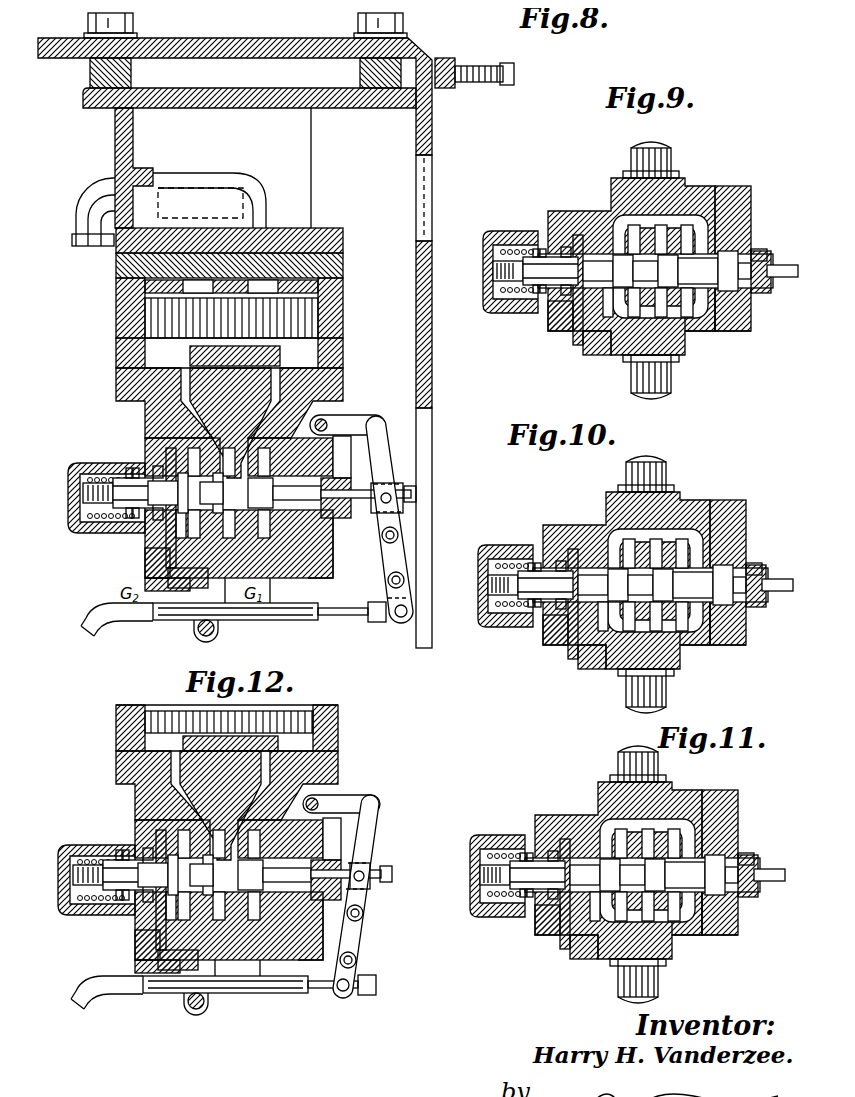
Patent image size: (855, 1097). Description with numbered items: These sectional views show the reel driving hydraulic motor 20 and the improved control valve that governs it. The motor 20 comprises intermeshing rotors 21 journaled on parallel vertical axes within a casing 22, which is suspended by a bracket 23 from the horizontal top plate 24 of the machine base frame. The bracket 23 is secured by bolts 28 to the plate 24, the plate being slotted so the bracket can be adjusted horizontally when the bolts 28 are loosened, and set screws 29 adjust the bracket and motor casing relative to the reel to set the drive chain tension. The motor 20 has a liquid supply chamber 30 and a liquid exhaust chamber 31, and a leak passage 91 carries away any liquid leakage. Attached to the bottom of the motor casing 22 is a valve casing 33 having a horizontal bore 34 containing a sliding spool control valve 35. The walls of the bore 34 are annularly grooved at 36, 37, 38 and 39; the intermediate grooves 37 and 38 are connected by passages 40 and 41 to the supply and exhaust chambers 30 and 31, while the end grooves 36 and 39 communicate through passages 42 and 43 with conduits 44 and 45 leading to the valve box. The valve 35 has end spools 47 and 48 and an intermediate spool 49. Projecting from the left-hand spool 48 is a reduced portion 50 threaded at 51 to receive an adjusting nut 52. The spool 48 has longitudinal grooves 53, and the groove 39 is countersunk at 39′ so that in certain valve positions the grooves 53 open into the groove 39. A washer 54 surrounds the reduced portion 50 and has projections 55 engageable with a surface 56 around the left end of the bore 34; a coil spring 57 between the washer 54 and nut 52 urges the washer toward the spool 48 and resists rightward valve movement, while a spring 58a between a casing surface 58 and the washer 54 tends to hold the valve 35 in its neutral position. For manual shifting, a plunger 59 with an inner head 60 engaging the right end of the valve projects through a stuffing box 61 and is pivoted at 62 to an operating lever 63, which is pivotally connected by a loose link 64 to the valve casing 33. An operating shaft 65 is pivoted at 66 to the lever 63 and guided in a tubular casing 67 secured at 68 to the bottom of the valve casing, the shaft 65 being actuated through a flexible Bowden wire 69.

In FIG. 8, the hydraulic motor 20 is at (335, 260).
In FIG. 12, the hydraulic motor 20 is at (108, 700).
In FIG. 8, the intermeshing rotors 21 is at (290, 312).
In FIG. 12, the intermeshing rotors 21 is at (280, 712).
In FIG. 8, the casing 22 is at (335, 290).
In FIG. 12, the casing 22 is at (320, 712).
In FIG. 8, the bracket 23 is at (107, 128).
In FIG. 8, the top plate 24 is at (260, 30).
In FIG. 8, the bolts 28 is at (126, 12).
In FIG. 8, the set screws 29 is at (458, 62).
In FIG. 8, the liquid supply chamber 30 is at (335, 340).
In FIG. 12, the liquid supply chamber 30 is at (330, 730).
In FIG. 8, the liquid exhaust chamber 31 is at (108, 312).
In FIG. 12, the liquid exhaust chamber 31 is at (108, 718).
In FIG. 8, the valve casing 33 is at (252, 572).
In FIG. 12, the valve casing 33 is at (229, 919).
In FIG. 9, the valve casing 33 is at (631, 254).
In FIG. 10, the valve casing 33 is at (626, 579).
In FIG. 11, the valve casing 33 is at (618, 870).
In FIG. 8, the horizontal bore 34 is at (322, 520).
In FIG. 12, the horizontal bore 34 is at (306, 939).
In FIG. 9, the horizontal bore 34 is at (745, 309).
In FIG. 10, the horizontal bore 34 is at (743, 623).
In FIG. 11, the horizontal bore 34 is at (734, 913).
In FIG. 8, the control valve 35 is at (343, 457).
In FIG. 12, the control valve 35 is at (333, 839).
In FIG. 9, the control valve 35 is at (747, 251).
In FIG. 10, the control valve 35 is at (744, 567).
In FIG. 11, the control valve 35 is at (737, 859).
In FIG. 8, the annular groove 36 is at (300, 562).
In FIG. 12, the annular groove 36 is at (265, 904).
In FIG. 9, the annular groove 36 is at (711, 240).
In FIG. 10, the annular groove 36 is at (708, 551).
In FIG. 11, the annular groove 36 is at (699, 844).
In FIG. 8, the annular groove 37 is at (262, 560).
In FIG. 12, the annular groove 37 is at (237, 970).
In FIG. 9, the annular groove 37 is at (668, 231).
In FIG. 10, the annular groove 37 is at (666, 547).
In FIG. 11, the annular groove 37 is at (658, 838).
In FIG. 8, the annular groove 38 is at (186, 540).
In FIG. 12, the annular groove 38 is at (177, 929).
In FIG. 9, the annular groove 38 is at (617, 305).
In FIG. 10, the annular groove 38 is at (615, 620).
In FIG. 11, the annular groove 38 is at (603, 911).
In FIG. 8, the annular groove 39 is at (220, 520).
In FIG. 12, the annular groove 39 is at (182, 926).
In FIG. 9, the annular groove 39 is at (614, 301).
In FIG. 10, the annular groove 39 is at (613, 620).
In FIG. 11, the annular groove 39 is at (596, 908).
In FIG. 8, the countersink 39′ is at (172, 520).
In FIG. 12, the countersink 39′ is at (140, 955).
In FIG. 9, the countersink 39′ is at (576, 343).
In FIG. 10, the countersink 39′ is at (566, 651).
In FIG. 11, the countersink 39′ is at (549, 947).
In FIG. 8, the passage 40 is at (285, 380).
In FIG. 12, the passage 40 is at (285, 760).
In FIG. 8, the passage 41 is at (160, 372).
In FIG. 12, the passage 41 is at (160, 752).
In FIG. 9, the passage 42 is at (700, 344).
In FIG. 10, the passage 42 is at (698, 653).
In FIG. 11, the passage 42 is at (687, 945).
In FIG. 9, the passage 43 is at (642, 249).
In FIG. 10, the passage 43 is at (645, 554).
In FIG. 11, the passage 43 is at (647, 839).
In FIG. 9, the conduit 44 is at (654, 383).
In FIG. 10, the conduit 44 is at (663, 691).
In FIG. 11, the conduit 44 is at (649, 981).
In FIG. 9, the conduit 45 is at (666, 154).
In FIG. 10, the conduit 45 is at (654, 473).
In FIG. 11, the conduit 45 is at (622, 764).
In FIG. 8, the end spool 47 is at (338, 489).
In FIG. 12, the end spool 47 is at (328, 869).
In FIG. 9, the end spool 47 is at (746, 256).
In FIG. 10, the end spool 47 is at (742, 567).
In FIG. 11, the end spool 47 is at (736, 862).
In FIG. 8, the end spool 48 is at (163, 445).
In FIG. 12, the end spool 48 is at (150, 869).
In FIG. 9, the end spool 48 is at (552, 290).
In FIG. 10, the end spool 48 is at (547, 604).
In FIG. 11, the end spool 48 is at (536, 898).
In FIG. 8, the intermediate spool 49 is at (225, 540).
In FIG. 12, the intermediate spool 49 is at (232, 831).
In FIG. 9, the intermediate spool 49 is at (637, 323).
In FIG. 10, the intermediate spool 49 is at (583, 551).
In FIG. 11, the intermediate spool 49 is at (587, 829).
In FIG. 8, the reduced portion 50 is at (115, 492).
In FIG. 12, the reduced portion 50 is at (99, 898).
In FIG. 9, the reduced portion 50 is at (550, 232).
In FIG. 10, the reduced portion 50 is at (541, 559).
In FIG. 11, the reduced portion 50 is at (537, 841).
In FIG. 8, the threads 51 is at (78, 485).
In FIG. 12, the threads 51 is at (67, 891).
In FIG. 9, the threads 51 is at (497, 297).
In FIG. 10, the threads 51 is at (489, 611).
In FIG. 11, the threads 51 is at (474, 888).
In FIG. 8, the adjusting nut 52 is at (72, 457).
In FIG. 12, the adjusting nut 52 is at (86, 877).
In FIG. 9, the adjusting nut 52 is at (493, 272).
In FIG. 10, the adjusting nut 52 is at (491, 586).
In FIG. 11, the adjusting nut 52 is at (482, 876).
In FIG. 8, the longitudinal grooves 53 is at (150, 508).
In FIG. 12, the longitudinal grooves 53 is at (126, 921).
In FIG. 9, the longitudinal grooves 53 is at (536, 309).
In FIG. 10, the longitudinal grooves 53 is at (532, 624).
In FIG. 11, the longitudinal grooves 53 is at (526, 912).
In FIG. 8, the washer 54 is at (150, 505).
In FIG. 12, the washer 54 is at (127, 909).
In FIG. 9, the washer 54 is at (576, 206).
In FIG. 10, the washer 54 is at (541, 530).
In FIG. 11, the washer 54 is at (549, 817).
In FIG. 8, the projections 55 is at (145, 545).
In FIG. 12, the projections 55 is at (138, 872).
In FIG. 9, the projections 55 is at (549, 333).
In FIG. 10, the projections 55 is at (555, 558).
In FIG. 11, the projections 55 is at (529, 941).
In FIG. 8, the surface 56 is at (170, 560).
In FIG. 12, the surface 56 is at (160, 960).
In FIG. 9, the surface 56 is at (571, 355).
In FIG. 10, the surface 56 is at (563, 662).
In FIG. 11, the surface 56 is at (584, 877).
In FIG. 8, the coil spring 57 is at (85, 508).
In FIG. 12, the coil spring 57 is at (89, 913).
In FIG. 9, the coil spring 57 is at (515, 248).
In FIG. 10, the coil spring 57 is at (502, 563).
In FIG. 11, the coil spring 57 is at (504, 852).
In FIG. 8, the surface 58 is at (120, 462).
In FIG. 12, the surface 58 is at (99, 912).
In FIG. 9, the surface 58 is at (506, 300).
In FIG. 11, the surface 58 is at (492, 894).
In FIG. 8, the spring 58a is at (127, 462).
In FIG. 12, the spring 58a is at (111, 854).
In FIG. 9, the spring 58a is at (532, 236).
In FIG. 10, the spring 58a is at (520, 618).
In FIG. 11, the spring 58a is at (516, 839).
In FIG. 8, the plunger 59 is at (395, 484).
In FIG. 12, the plunger 59 is at (372, 864).
In FIG. 9, the plunger 59 is at (782, 252).
In FIG. 10, the plunger 59 is at (777, 567).
In FIG. 11, the plunger 59 is at (769, 861).
In FIG. 8, the inner head 60 is at (372, 410).
In FIG. 12, the inner head 60 is at (354, 905).
In FIG. 9, the inner head 60 is at (767, 276).
In FIG. 10, the inner head 60 is at (765, 589).
In FIG. 11, the inner head 60 is at (756, 884).
In FIG. 8, the stuffing box 61 is at (355, 482).
In FIG. 12, the stuffing box 61 is at (352, 858).
In FIG. 9, the stuffing box 61 is at (755, 244).
In FIG. 10, the stuffing box 61 is at (754, 559).
In FIG. 11, the stuffing box 61 is at (759, 834).
In FIG. 8, the pivotal connection 62 is at (384, 486).
In FIG. 12, the pivotal connection 62 is at (358, 866).
In FIG. 8, the operating lever 63 is at (395, 520).
In FIG. 12, the operating lever 63 is at (350, 925).
In FIG. 8, the loose link 64 is at (350, 400).
In FIG. 12, the loose link 64 is at (360, 790).
In FIG. 8, the operating shaft 65 is at (368, 614).
In FIG. 12, the operating shaft 65 is at (342, 1006).
In FIG. 8, the pivotal connection 66 is at (399, 603).
In FIG. 12, the pivotal connection 66 is at (342, 978).
In FIG. 8, the tubular casing 67 is at (300, 612).
In FIG. 12, the tubular casing 67 is at (225, 1017).
In FIG. 8, the securing point 68 is at (205, 628).
In FIG. 12, the securing point 68 is at (197, 1028).
In FIG. 8, the flexible shaft 69 is at (90, 625).
In FIG. 12, the flexible shaft 69 is at (96, 1006).
In FIG. 8, the leak passage 91 is at (68, 225).